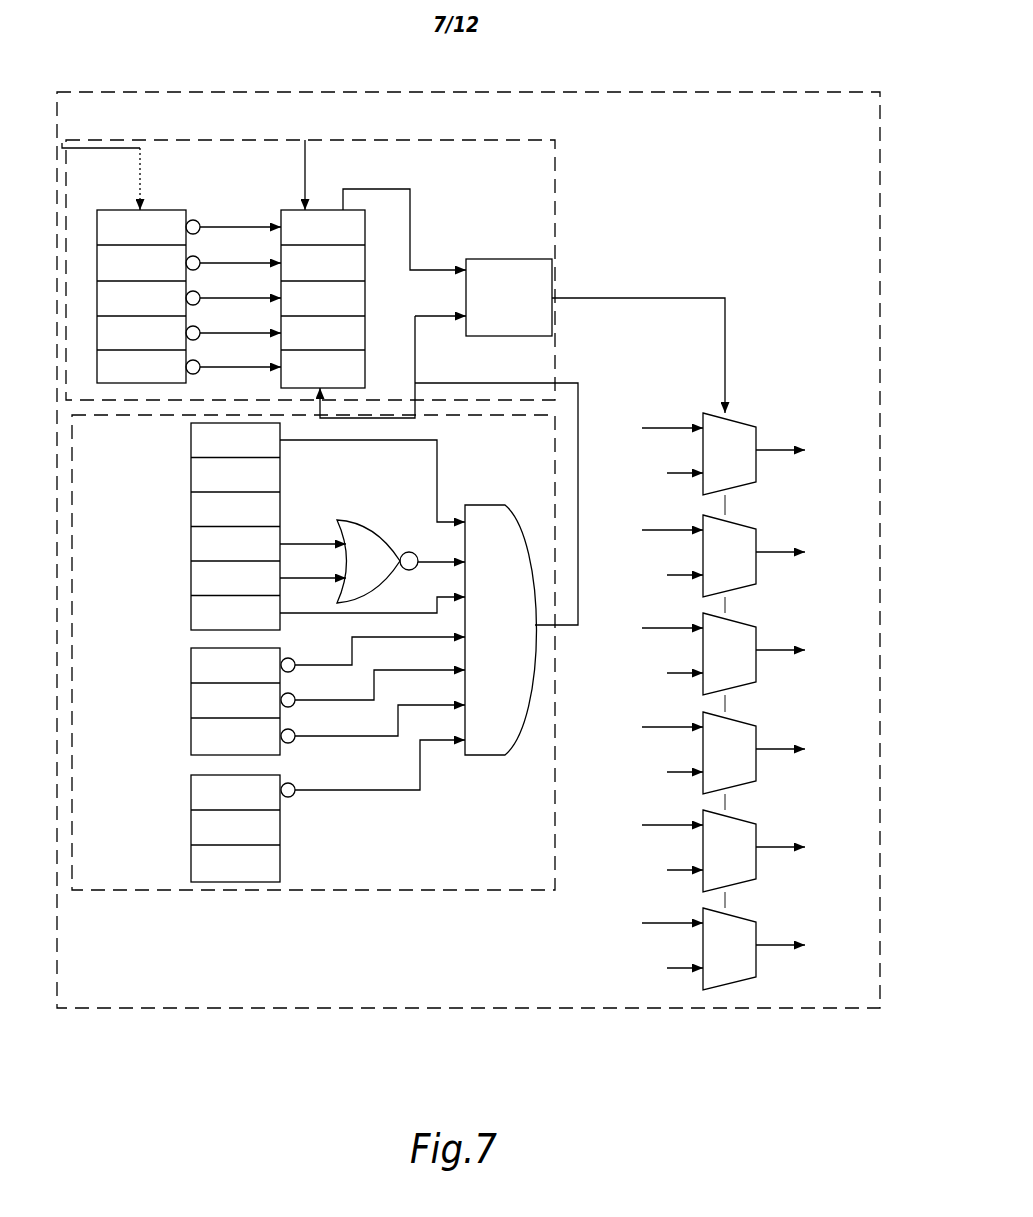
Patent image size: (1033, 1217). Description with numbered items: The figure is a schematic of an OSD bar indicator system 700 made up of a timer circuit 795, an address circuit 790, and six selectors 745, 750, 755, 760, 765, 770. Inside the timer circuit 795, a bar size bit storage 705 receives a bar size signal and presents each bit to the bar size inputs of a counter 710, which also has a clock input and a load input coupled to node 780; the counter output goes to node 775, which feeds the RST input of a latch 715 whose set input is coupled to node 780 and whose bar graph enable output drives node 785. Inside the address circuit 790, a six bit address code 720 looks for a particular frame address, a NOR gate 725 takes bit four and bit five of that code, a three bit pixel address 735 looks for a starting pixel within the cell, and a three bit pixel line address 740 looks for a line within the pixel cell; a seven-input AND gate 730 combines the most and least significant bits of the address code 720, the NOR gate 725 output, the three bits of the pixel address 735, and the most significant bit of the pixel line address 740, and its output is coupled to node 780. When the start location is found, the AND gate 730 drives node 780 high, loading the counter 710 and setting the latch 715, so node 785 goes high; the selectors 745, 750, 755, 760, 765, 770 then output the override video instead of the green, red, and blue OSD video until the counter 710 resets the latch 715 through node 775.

The OSD bar indicator system 700 is at (641, 59).
The bar size bit storage 705 is at (155, 211).
The counter 710 is at (365, 300).
The latch 715 is at (552, 263).
The 6 bit address code 720 is at (190, 575).
The NOR gate 725 is at (346, 522).
The AND gate 730 is at (480, 507).
The 3 bit pixel address 735 is at (190, 652).
The 3 bit pixel line address 740 is at (190, 776).
The selector 745 is at (740, 417).
The selector 750 is at (742, 518).
The selector 755 is at (742, 617).
The selector 760 is at (742, 716).
The selector 765 is at (742, 815).
The selector 770 is at (738, 908).
The node 775 is at (410, 206).
The node 780 is at (555, 385).
The node 785 is at (725, 307).
The address circuit 790 is at (397, 892).
The timer circuit 795 is at (462, 128).